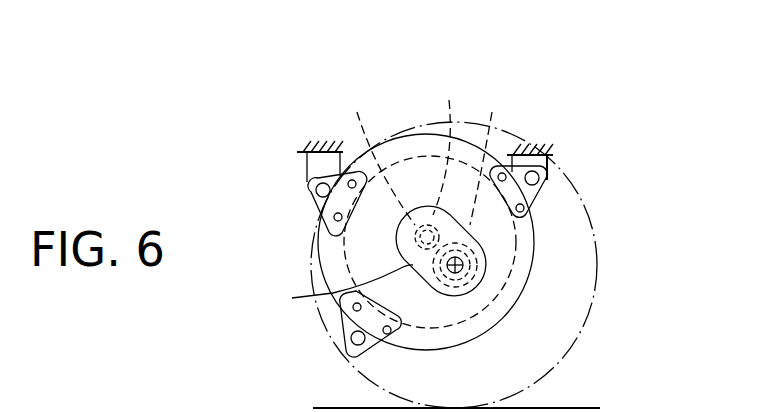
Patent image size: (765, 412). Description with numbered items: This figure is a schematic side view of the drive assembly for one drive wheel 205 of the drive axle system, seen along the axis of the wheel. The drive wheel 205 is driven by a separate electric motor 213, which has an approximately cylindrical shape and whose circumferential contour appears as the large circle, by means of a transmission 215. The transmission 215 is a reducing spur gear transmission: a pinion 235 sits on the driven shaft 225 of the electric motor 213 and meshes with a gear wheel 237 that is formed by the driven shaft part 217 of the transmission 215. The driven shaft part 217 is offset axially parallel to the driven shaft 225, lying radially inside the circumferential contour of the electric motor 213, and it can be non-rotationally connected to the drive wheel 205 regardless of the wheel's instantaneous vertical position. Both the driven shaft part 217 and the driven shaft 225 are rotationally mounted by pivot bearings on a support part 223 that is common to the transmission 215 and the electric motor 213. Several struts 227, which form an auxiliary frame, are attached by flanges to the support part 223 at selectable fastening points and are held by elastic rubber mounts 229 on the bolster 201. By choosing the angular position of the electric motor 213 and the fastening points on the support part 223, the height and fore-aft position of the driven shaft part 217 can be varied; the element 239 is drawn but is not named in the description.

The bolster 201 is at (310, 143).
The drive wheel 205 is at (600, 298).
The electric motor 213 is at (433, 323).
The transmission 215 is at (325, 292).
The driven shaft part 217 is at (462, 262).
The support part 223 is at (505, 294).
The driven shaft 225 is at (372, 153).
The strut 227 is at (312, 193).
The elastic rubber mount 229 is at (300, 153).
The pinion 235 is at (440, 141).
The gear wheel 237 is at (505, 154).
The bearing 239 is at (462, 268).